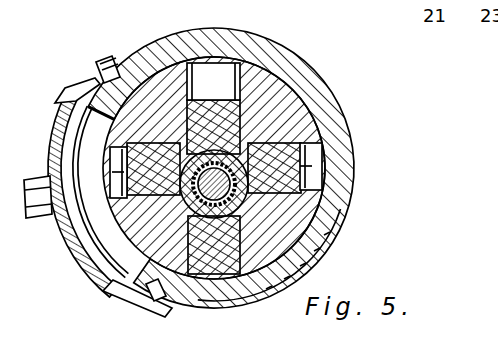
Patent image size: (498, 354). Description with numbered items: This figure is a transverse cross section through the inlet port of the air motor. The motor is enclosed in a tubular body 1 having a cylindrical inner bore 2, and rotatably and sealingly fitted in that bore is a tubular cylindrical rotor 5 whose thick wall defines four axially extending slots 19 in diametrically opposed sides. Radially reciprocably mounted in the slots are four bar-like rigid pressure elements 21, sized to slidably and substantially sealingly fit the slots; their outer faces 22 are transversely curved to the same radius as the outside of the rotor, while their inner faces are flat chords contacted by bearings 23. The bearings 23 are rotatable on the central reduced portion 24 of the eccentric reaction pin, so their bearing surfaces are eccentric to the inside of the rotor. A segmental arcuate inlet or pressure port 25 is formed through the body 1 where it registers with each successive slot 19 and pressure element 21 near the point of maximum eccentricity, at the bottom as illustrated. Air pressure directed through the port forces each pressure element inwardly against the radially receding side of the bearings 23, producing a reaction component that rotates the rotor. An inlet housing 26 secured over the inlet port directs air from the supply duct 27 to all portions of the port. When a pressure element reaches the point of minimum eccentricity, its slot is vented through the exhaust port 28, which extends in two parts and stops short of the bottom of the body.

The tubular body 1 is at (163, 43).
The cylindrical inner bore 2 is at (213, 81).
The tubular cylindrical rotor 5 is at (297, 218).
The axially extending slots 19 is at (285, 46).
The pressure elements 21 is at (240, 132).
The outer faces of the pressure elements 22 is at (300, 186).
The bearings 23 is at (204, 232).
The central reduced portion 24 is at (224, 232).
The inlet or pressure port 25 is at (100, 233).
The inlet housing 26 is at (68, 108).
The supply duct 27 is at (33, 177).
The exhaust port 28 is at (240, 23).